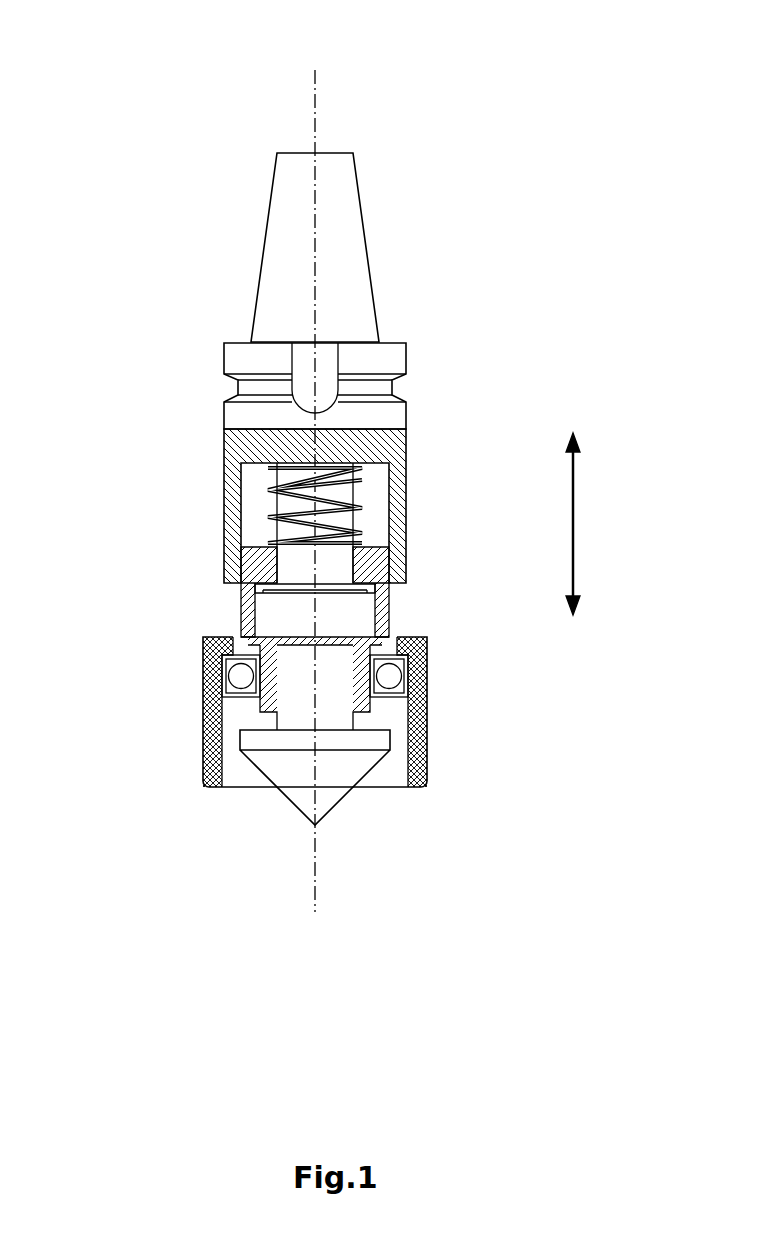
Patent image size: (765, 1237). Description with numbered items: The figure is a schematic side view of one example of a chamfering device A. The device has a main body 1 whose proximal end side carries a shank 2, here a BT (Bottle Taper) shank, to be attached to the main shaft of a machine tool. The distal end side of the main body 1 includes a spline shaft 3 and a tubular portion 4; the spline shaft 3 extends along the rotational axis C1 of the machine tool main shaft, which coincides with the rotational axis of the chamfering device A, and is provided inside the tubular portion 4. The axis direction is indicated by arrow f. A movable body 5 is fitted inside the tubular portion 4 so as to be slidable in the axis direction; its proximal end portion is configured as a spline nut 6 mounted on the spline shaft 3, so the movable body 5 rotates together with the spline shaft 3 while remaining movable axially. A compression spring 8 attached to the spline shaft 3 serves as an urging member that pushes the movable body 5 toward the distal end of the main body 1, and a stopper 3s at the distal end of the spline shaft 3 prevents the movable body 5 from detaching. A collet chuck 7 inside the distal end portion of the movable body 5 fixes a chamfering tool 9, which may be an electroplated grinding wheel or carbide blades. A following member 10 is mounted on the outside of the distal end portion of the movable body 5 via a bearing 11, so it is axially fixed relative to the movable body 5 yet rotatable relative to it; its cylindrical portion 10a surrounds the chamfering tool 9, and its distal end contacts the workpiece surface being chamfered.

The chamfering device A is at (91, 133).
The rotational axis C1 is at (316, 100).
The main body 1 is at (201, 345).
The shank 2 is at (265, 222).
The spline shaft 3 is at (250, 498).
The stopper 3s is at (360, 595).
The tubular portion 4 is at (403, 501).
The movable body 5 is at (238, 605).
The spline nut 6 is at (382, 563).
The collet chuck 7 is at (372, 709).
The compression spring 8 is at (363, 488).
The chamfering tool 9 is at (288, 800).
The following member 10 is at (201, 709).
The cylindrical portion 10a is at (203, 752).
The bearing 11 is at (392, 673).
The arrow indicating rotational axis direction f is at (576, 520).